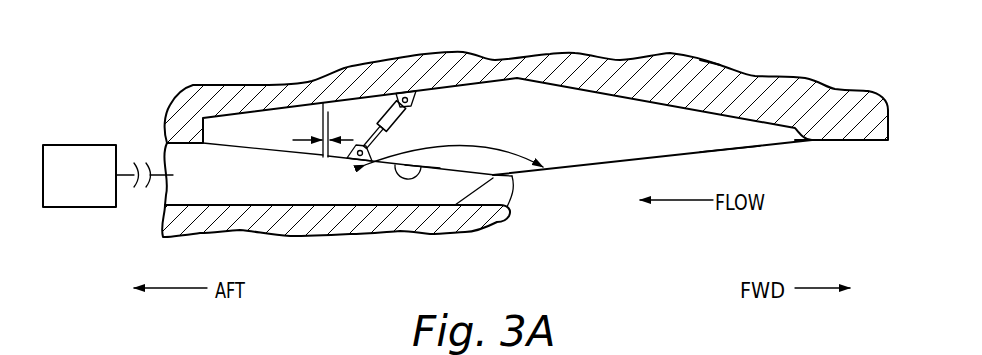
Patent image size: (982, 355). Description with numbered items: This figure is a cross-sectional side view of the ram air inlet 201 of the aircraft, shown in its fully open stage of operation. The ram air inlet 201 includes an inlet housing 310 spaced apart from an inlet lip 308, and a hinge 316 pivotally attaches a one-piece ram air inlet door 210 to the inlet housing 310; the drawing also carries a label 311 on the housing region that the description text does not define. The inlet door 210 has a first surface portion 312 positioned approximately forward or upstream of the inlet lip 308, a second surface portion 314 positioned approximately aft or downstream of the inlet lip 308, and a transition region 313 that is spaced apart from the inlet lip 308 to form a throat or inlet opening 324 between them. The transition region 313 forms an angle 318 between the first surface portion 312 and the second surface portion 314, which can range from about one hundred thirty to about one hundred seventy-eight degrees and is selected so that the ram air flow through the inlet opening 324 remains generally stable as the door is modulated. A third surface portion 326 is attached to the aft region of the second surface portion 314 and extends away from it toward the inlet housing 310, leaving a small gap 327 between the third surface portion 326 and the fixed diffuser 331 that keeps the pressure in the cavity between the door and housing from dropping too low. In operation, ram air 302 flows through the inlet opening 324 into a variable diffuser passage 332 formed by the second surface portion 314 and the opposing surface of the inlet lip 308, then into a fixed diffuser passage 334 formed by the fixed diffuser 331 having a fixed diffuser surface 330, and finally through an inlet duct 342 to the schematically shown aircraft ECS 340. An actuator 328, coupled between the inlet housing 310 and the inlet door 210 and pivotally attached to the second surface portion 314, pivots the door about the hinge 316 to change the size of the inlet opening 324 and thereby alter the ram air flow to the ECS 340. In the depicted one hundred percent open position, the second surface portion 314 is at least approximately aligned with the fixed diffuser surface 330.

The ram air inlet 201 is at (580, 240).
The ram air inlet door 210 is at (732, 152).
The ram air 302 is at (683, 202).
The inlet lip 308 is at (512, 216).
The inlet housing 310 is at (677, 103).
The nozzle passage 311 is at (758, 146).
The first surface portion 312 is at (632, 161).
The transition region 313 is at (453, 207).
The second surface portion 314 is at (423, 163).
The hinge 316 is at (811, 141).
The angle 318 is at (497, 147).
The inlet opening 324 is at (513, 177).
The third surface portion 326 is at (333, 118).
The gap 327 is at (299, 136).
The actuator 328 is at (400, 118).
The fixed diffuser surface 330 is at (283, 157).
The fixed diffuser 331 is at (230, 147).
The variable diffuser passage 332 is at (377, 190).
The fixed diffuser passage 334 is at (243, 180).
The aircraft ECS 340 is at (82, 208).
The inlet duct 342 is at (128, 164).